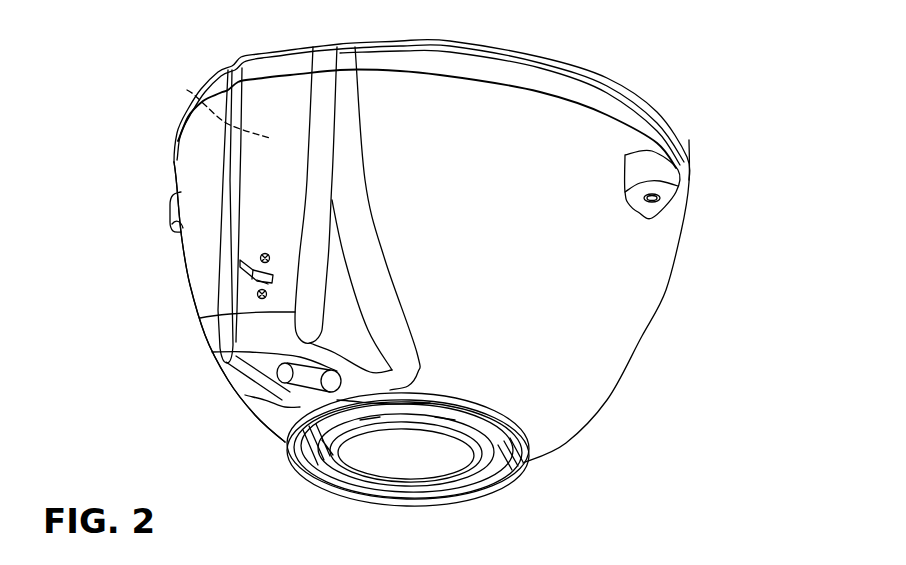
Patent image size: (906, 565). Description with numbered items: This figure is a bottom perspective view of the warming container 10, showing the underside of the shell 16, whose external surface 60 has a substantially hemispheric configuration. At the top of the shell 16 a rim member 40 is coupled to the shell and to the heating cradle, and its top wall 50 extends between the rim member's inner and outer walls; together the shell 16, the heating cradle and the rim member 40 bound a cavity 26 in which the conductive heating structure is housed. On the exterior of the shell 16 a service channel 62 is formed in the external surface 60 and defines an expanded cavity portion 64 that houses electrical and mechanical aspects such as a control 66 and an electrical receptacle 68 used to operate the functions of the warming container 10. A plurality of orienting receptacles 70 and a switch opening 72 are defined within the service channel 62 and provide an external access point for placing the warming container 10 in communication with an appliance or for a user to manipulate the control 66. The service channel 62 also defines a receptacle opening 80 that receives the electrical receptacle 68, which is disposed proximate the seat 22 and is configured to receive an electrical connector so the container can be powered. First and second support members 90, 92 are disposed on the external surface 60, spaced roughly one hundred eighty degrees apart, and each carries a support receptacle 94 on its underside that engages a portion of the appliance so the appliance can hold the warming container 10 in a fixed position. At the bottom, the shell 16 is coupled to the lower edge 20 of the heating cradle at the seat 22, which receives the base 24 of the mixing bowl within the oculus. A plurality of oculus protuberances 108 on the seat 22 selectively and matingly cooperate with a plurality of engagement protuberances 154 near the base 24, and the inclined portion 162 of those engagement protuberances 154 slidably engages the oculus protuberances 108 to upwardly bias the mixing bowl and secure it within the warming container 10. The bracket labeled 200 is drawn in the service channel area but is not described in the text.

The warming container 10 is at (115, 437).
The shell 16 is at (609, 405).
The lower edge 20 is at (503, 458).
The seat 22 is at (290, 423).
The base 24 is at (409, 462).
The cavity 26 is at (607, 310).
The rim member 40 is at (162, 148).
The top wall 50 is at (443, 63).
The external surface 60 is at (617, 277).
The service channel 62 is at (292, 87).
The expanded cavity portion 64 is at (187, 90).
The control 66 is at (257, 280).
The electrical receptacle 68 is at (280, 389).
The orienting receptacles 70 is at (259, 257).
The switch opening 72 is at (259, 292).
The receptacle opening 80 is at (277, 368).
The first support member 90 is at (665, 178).
The second support member 92 is at (172, 217).
The support receptacle 94 is at (657, 200).
The oculus protuberances 108 is at (291, 460).
The engagement protuberances 154 is at (352, 428).
The inclined portion 162 is at (357, 422).
The bracket 200 is at (240, 263).